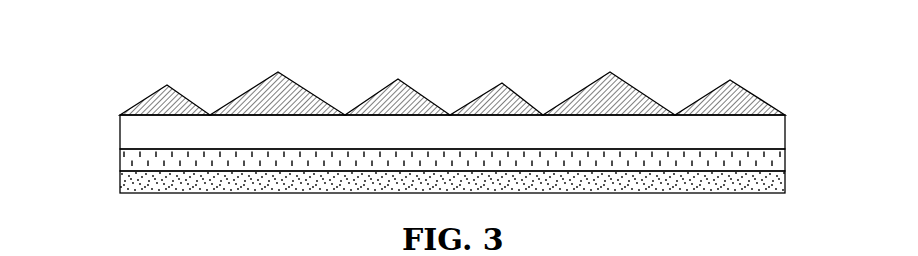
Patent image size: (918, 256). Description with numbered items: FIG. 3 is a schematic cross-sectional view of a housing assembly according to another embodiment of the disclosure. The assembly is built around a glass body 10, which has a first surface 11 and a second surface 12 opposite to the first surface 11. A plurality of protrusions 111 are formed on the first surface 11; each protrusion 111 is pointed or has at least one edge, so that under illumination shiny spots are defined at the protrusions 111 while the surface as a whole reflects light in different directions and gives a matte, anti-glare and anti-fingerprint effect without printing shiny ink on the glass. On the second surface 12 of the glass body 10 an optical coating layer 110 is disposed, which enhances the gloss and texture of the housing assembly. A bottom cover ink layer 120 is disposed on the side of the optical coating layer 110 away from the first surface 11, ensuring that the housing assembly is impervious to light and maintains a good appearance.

The glass body 10 is at (785, 127).
The first surface 11 is at (481, 82).
The protrusion 111 is at (427, 96).
The second surface 12 is at (440, 161).
The optical coating layer 110 is at (120, 157).
The bottom cover ink layer 120 is at (120, 188).